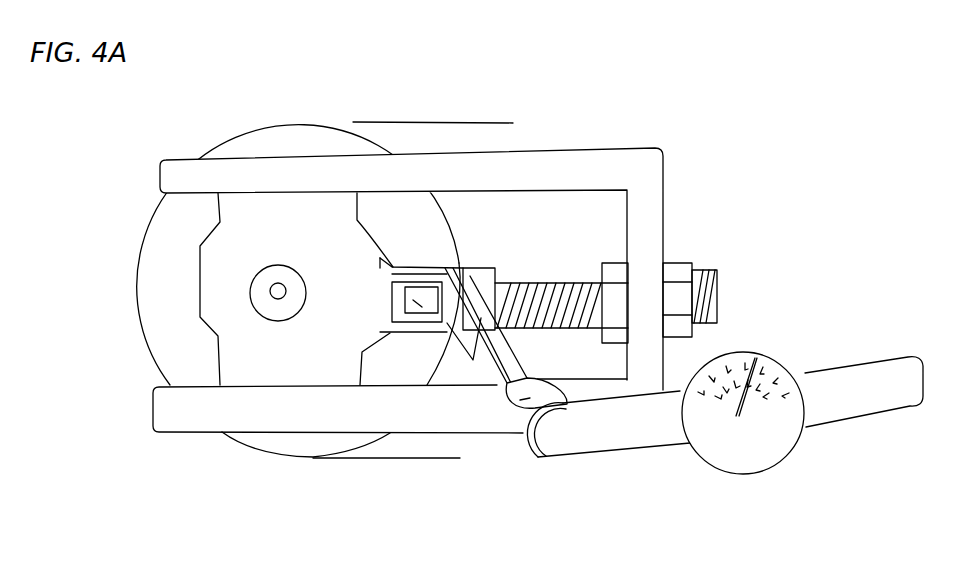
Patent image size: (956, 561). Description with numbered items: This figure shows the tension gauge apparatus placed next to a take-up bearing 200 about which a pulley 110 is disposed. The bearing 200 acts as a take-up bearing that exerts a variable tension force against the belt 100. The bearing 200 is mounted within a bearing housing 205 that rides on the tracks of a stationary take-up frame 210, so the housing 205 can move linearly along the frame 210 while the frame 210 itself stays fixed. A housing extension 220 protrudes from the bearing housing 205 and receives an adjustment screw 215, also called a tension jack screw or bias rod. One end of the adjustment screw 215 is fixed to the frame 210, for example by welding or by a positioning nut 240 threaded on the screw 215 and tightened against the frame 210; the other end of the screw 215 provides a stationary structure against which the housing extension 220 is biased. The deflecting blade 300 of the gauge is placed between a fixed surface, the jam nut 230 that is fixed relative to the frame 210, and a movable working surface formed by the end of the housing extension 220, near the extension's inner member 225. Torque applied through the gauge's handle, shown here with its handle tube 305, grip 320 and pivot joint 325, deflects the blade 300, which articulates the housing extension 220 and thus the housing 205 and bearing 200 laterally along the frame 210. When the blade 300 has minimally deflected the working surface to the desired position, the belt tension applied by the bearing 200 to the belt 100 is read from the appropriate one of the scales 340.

The belt 100 is at (403, 120).
The pulley 110 is at (257, 145).
The bearing 200 is at (260, 278).
The bearing housing 205 is at (213, 303).
The take-up frame 210 is at (643, 180).
The adjustment screw 215 is at (535, 277).
The housing extension 220 is at (405, 270).
The clamp jaw 225 is at (420, 300).
The jam nut 230 is at (480, 260).
The positioning nut 240 is at (675, 258).
The deflecting blade 300 is at (520, 353).
The handle tube 305 is at (597, 467).
The grip handle 320 is at (845, 398).
The pivot joint 325 is at (530, 400).
The scales 340 is at (750, 360).